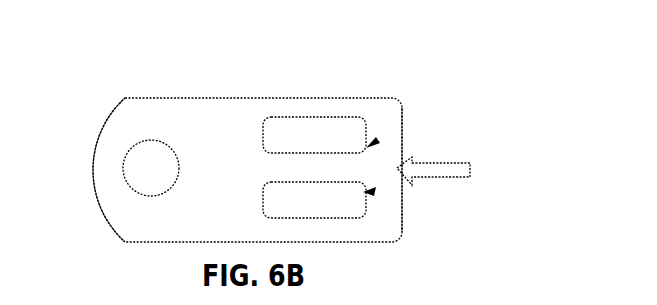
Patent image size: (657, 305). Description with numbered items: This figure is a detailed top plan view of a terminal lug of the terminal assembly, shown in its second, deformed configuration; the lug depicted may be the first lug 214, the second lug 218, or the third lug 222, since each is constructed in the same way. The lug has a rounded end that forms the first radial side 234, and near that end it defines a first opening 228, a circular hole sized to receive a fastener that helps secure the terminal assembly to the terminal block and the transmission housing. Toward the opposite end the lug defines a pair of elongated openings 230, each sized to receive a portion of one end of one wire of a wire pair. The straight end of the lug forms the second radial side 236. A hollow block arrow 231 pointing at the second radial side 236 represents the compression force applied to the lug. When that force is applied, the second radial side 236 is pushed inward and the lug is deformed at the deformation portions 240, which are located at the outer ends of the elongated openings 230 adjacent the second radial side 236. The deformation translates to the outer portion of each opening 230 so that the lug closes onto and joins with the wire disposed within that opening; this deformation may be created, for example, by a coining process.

The first lug 214 is at (240, 136).
The second lug 218 is at (240, 136).
The third lug 222 is at (150, 53).
The first opening 228 is at (123, 168).
The slots 230 is at (316, 182).
The flow direction arrow 231 is at (438, 159).
The first radial side 234 is at (99, 130).
The second radial side 236 is at (403, 133).
The deformation portions 240 is at (370, 146).